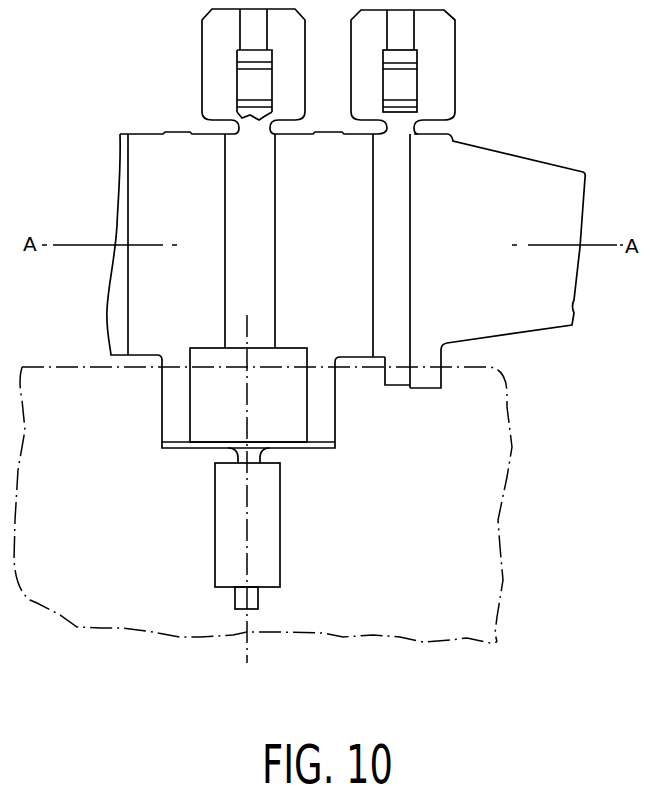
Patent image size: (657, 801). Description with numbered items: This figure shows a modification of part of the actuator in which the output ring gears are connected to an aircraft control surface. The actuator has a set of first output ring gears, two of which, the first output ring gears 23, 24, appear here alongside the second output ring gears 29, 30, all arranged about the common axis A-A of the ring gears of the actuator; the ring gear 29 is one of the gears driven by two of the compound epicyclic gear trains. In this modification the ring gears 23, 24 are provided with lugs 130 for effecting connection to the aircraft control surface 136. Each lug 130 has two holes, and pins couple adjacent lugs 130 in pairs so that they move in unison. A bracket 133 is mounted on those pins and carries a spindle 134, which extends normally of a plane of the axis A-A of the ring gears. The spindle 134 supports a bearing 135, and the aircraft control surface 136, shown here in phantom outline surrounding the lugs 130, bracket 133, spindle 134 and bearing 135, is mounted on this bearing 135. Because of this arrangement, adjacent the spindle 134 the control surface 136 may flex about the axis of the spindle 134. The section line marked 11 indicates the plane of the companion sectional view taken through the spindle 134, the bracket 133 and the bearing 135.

The section line of FIG. 11 is at (288, 663).
The first output ring gear 23 is at (183, 203).
The first output ring gear 24 is at (333, 203).
The second output ring gear 29 is at (260, 203).
The second output ring gear 30 is at (403, 203).
The lug 130 is at (175, 402).
The bracket 133 is at (205, 423).
The spindle 134 is at (253, 597).
The bearing 135 is at (258, 527).
The aircraft control surface 136 is at (445, 588).